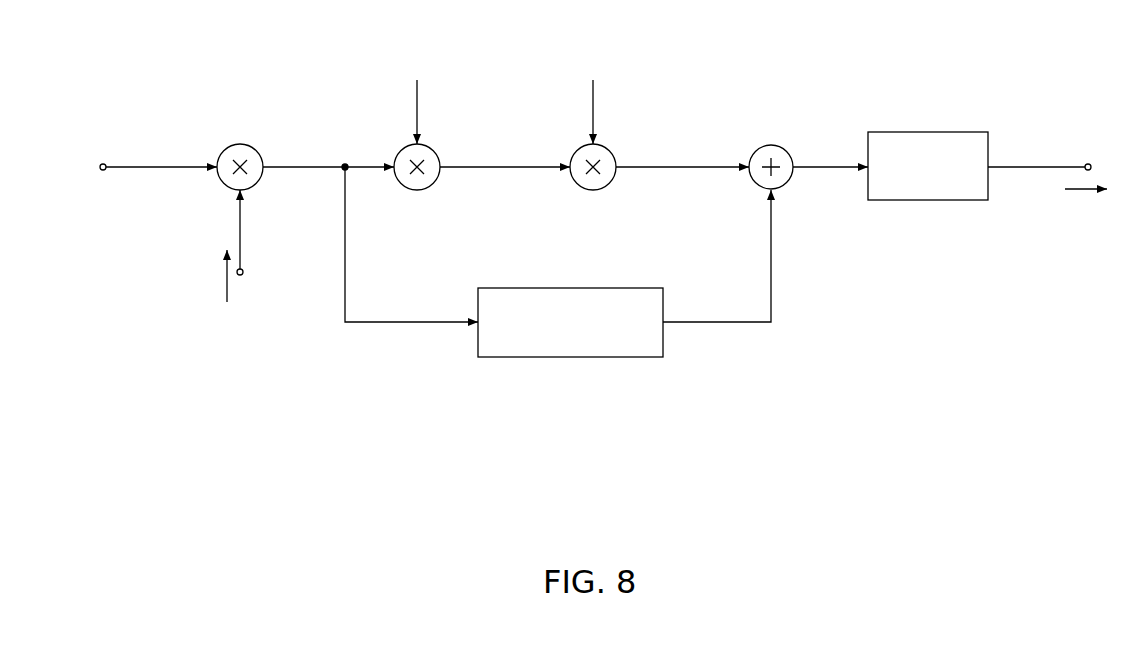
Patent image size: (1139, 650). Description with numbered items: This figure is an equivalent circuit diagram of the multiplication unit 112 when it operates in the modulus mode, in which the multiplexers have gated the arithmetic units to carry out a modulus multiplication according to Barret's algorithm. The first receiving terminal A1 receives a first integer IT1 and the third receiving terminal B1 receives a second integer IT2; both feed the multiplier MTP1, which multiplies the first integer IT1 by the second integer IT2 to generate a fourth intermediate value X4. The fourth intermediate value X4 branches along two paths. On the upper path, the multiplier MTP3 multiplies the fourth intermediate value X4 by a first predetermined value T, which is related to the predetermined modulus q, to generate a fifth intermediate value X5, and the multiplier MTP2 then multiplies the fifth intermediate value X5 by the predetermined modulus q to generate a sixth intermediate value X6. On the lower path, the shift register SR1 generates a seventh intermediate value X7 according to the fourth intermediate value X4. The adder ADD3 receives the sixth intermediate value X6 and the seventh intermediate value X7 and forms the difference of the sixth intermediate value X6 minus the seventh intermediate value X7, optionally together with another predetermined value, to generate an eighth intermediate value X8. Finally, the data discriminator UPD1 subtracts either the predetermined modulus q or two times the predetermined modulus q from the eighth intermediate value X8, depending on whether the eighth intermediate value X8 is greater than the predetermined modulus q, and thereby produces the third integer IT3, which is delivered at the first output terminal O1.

The multiplication unit 112 is at (1007, 60).
The first receiving terminal A1 is at (101, 170).
The third receiving terminal B1 is at (243, 272).
The first output terminal O1 is at (1090, 164).
The first integer IT1 is at (133, 143).
The second integer IT2 is at (233, 295).
The third integer IT3 is at (1063, 191).
The multiplier MTP1 is at (242, 143).
The multiplier MTP2 is at (612, 150).
The multiplier MTP3 is at (435, 149).
The adder ADD3 is at (773, 145).
The shift register SR1 is at (593, 337).
The data discriminator UPD1 is at (963, 182).
The first predetermined value T is at (415, 96).
The predetermined modulus q is at (595, 95).
The fourth intermediate value X4 is at (328, 151).
The fifth intermediate value X5 is at (505, 187).
The sixth intermediate value X6 is at (682, 188).
The seventh intermediate value X7 is at (738, 256).
The eighth intermediate value X8 is at (830, 150).